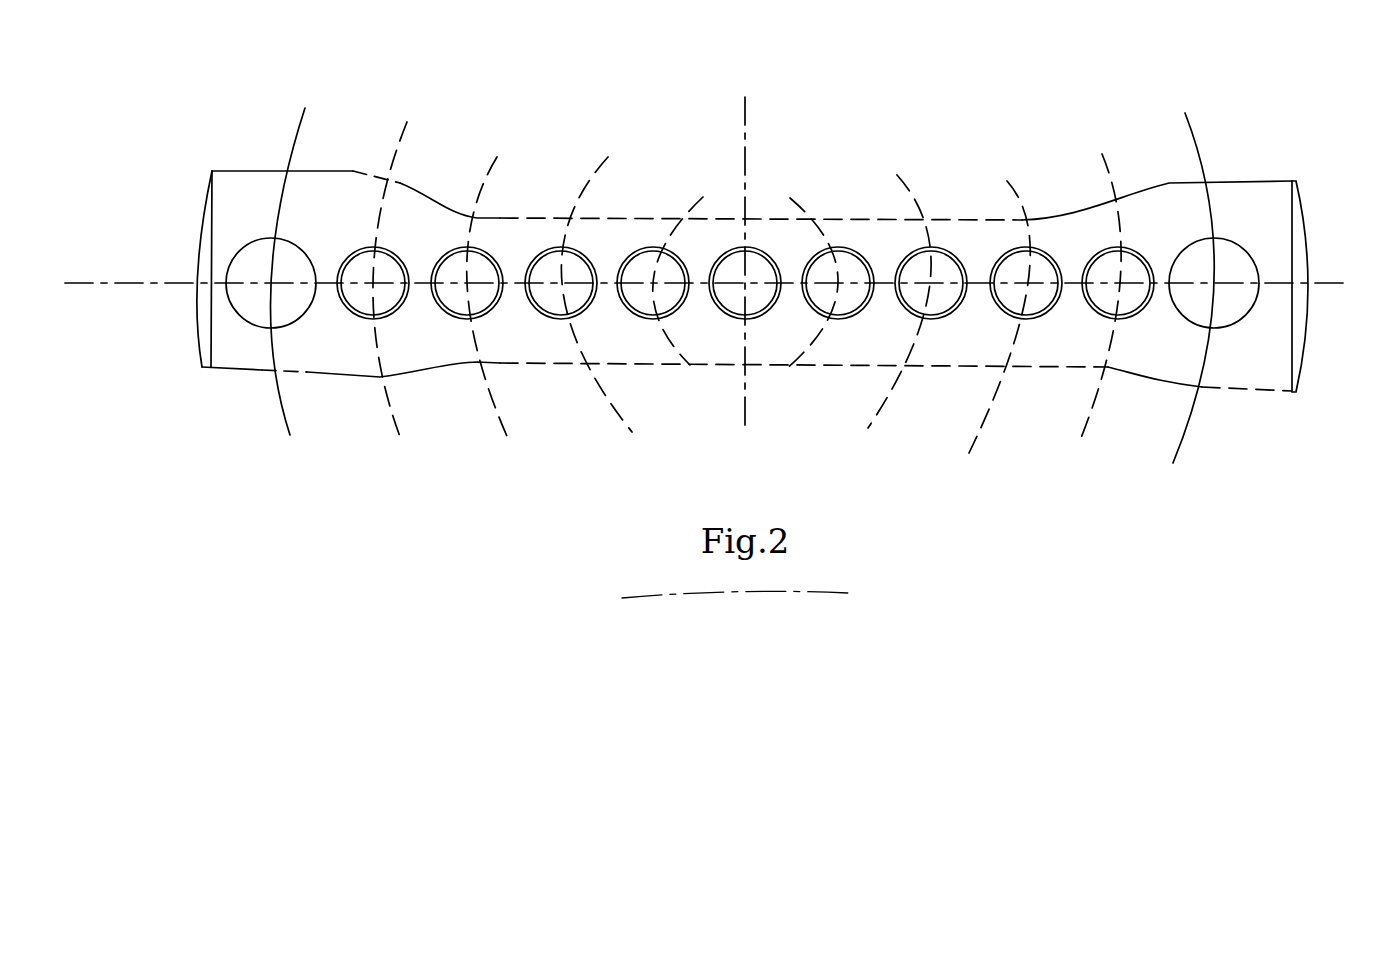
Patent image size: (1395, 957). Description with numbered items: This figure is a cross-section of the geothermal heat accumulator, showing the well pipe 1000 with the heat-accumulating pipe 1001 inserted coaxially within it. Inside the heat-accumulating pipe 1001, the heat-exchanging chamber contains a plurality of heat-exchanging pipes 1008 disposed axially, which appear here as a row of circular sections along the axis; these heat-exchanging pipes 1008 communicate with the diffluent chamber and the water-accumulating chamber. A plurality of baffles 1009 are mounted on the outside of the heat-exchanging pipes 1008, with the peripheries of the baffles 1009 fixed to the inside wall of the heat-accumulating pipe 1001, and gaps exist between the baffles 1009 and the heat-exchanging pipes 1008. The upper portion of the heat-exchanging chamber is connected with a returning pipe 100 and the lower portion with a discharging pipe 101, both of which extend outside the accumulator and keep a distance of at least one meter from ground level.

The returning pipe 100 is at (1228, 238).
The discharging pipe 101 is at (288, 240).
The well pipe 1000 is at (1310, 252).
The heat-accumulating pipe 1001 is at (1300, 305).
The heat-exchanging pipes 1008 is at (1026, 318).
The baffles 1009 is at (948, 330).